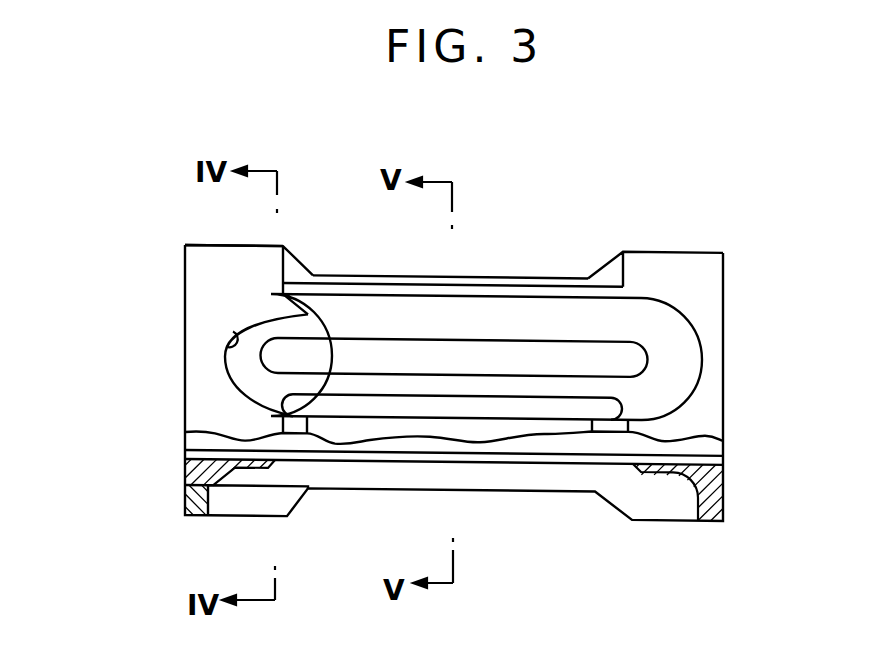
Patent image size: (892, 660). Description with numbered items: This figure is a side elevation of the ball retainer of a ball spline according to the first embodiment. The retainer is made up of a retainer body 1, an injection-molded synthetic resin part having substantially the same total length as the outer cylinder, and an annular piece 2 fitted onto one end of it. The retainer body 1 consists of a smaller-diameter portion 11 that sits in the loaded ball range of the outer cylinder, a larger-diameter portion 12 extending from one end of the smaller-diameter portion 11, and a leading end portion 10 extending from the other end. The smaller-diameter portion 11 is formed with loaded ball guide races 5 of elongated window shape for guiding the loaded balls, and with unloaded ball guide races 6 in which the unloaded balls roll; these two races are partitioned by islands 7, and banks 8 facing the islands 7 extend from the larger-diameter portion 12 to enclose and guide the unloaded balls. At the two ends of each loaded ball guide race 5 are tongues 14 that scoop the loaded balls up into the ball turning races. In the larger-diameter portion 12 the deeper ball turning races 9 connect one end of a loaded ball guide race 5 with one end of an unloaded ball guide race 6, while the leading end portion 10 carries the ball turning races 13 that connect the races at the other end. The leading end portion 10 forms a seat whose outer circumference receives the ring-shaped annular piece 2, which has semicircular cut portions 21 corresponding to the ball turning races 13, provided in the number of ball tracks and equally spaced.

The retainer body 1 is at (572, 247).
The annular piece 2 is at (176, 265).
The loaded ball guide race 5 is at (537, 392).
The unloaded ball guide race 6 is at (481, 322).
The island 7 is at (602, 353).
The bank 8 is at (362, 288).
The ball turning race 9 is at (685, 373).
The leading end portion 10 is at (272, 485).
The smaller-diameter portion 11 is at (510, 272).
The larger-diameter portion 12 is at (665, 258).
The ball turning race 13 is at (237, 363).
The tongue 14 is at (250, 467).
The semicircular cut portion 21 is at (222, 343).